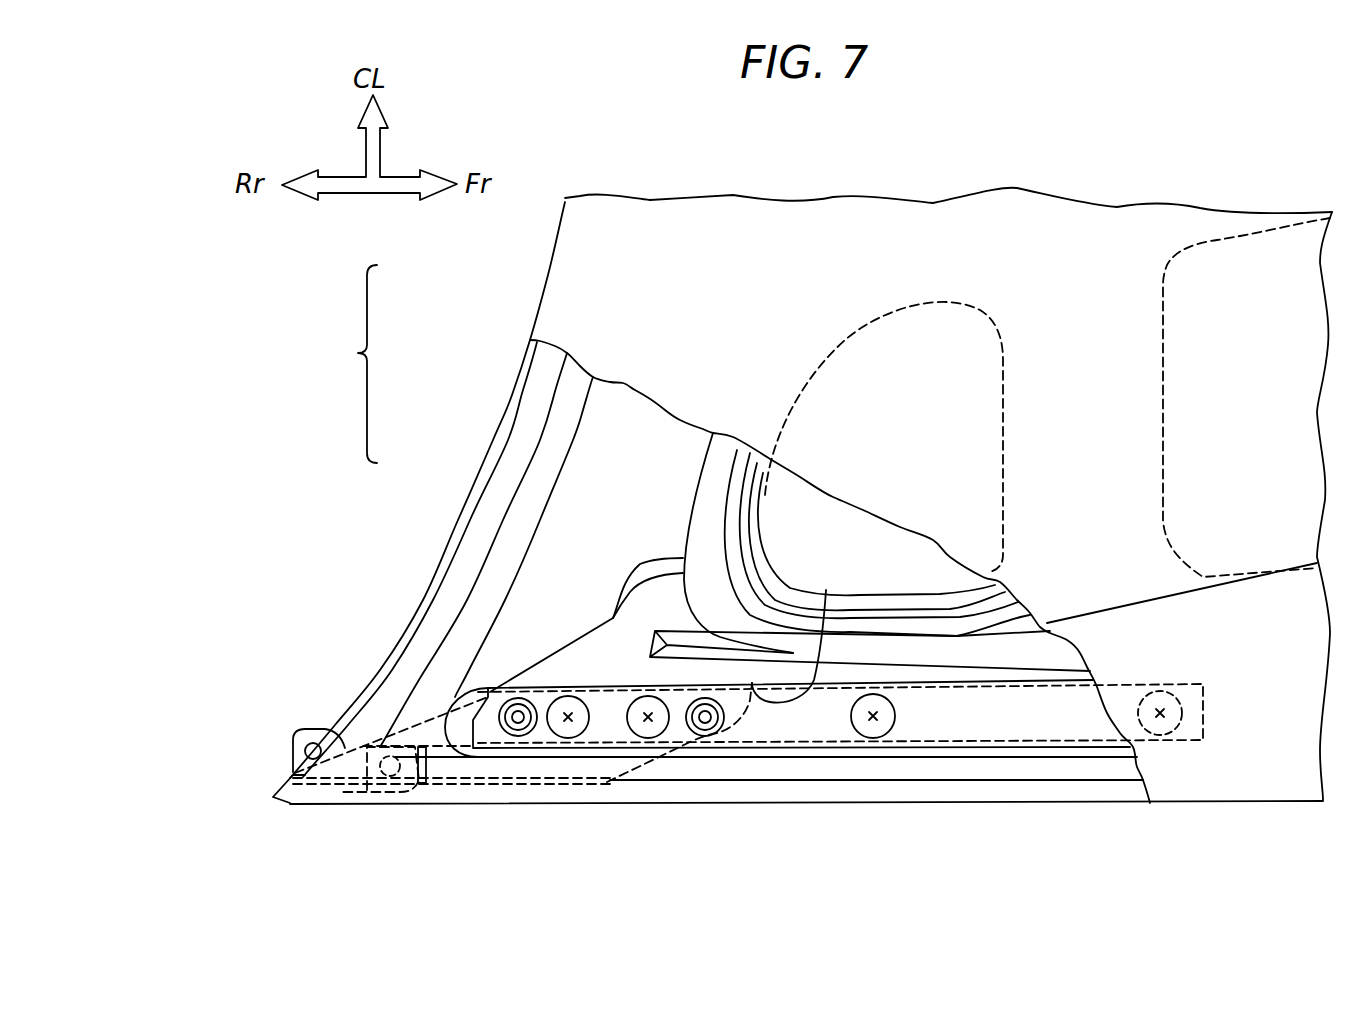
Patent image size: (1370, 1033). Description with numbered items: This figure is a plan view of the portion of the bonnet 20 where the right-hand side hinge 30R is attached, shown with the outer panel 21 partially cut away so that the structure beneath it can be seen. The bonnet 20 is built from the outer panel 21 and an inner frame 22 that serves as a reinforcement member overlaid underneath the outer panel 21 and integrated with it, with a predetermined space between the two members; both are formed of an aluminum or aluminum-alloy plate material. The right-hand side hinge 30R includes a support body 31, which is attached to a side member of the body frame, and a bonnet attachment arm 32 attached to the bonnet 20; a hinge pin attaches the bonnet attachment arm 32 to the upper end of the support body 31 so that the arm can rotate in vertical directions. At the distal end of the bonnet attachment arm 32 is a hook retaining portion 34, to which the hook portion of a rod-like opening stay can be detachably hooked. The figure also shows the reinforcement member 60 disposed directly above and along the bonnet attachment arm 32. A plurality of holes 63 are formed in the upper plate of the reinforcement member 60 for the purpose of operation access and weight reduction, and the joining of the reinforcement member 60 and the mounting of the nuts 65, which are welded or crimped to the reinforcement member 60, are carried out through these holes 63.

The bonnet 20 is at (357, 353).
The outer panel 21 is at (623, 272).
The inner frame 22 is at (593, 478).
The right-hand side hinge 30R is at (329, 814).
The support body 31 is at (375, 790).
The bonnet attachment arm 32 is at (547, 785).
The hook retaining portion 34 is at (826, 590).
The reinforcement member 60 is at (1018, 773).
The holes 63 is at (488, 697).
The nut 65 is at (512, 727).